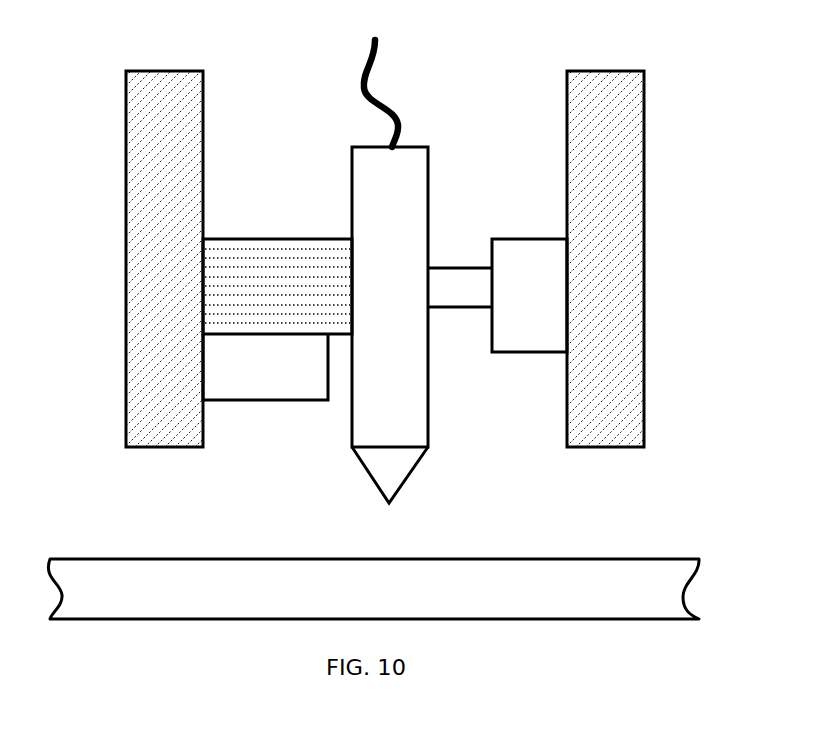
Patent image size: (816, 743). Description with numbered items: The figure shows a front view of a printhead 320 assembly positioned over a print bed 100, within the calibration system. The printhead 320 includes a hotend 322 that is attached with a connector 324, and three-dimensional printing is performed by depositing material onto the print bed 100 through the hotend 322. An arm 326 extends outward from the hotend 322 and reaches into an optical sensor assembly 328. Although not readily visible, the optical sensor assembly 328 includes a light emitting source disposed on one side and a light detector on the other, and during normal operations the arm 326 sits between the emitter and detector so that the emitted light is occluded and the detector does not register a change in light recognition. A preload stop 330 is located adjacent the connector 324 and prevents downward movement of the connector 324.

The print bed 100 is at (658, 558).
The printhead 320 is at (126, 370).
The hotend 322 is at (466, 165).
The connector 324 is at (309, 238).
The arm 326 is at (459, 305).
The optical sensor assembly 328 is at (506, 238).
The preload stop 330 is at (233, 401).